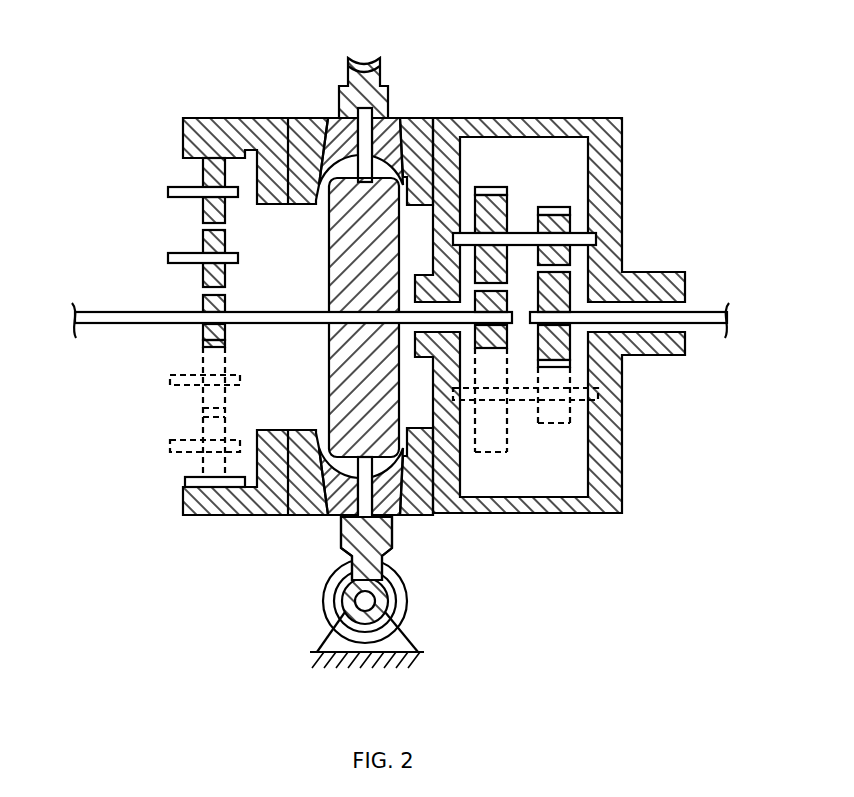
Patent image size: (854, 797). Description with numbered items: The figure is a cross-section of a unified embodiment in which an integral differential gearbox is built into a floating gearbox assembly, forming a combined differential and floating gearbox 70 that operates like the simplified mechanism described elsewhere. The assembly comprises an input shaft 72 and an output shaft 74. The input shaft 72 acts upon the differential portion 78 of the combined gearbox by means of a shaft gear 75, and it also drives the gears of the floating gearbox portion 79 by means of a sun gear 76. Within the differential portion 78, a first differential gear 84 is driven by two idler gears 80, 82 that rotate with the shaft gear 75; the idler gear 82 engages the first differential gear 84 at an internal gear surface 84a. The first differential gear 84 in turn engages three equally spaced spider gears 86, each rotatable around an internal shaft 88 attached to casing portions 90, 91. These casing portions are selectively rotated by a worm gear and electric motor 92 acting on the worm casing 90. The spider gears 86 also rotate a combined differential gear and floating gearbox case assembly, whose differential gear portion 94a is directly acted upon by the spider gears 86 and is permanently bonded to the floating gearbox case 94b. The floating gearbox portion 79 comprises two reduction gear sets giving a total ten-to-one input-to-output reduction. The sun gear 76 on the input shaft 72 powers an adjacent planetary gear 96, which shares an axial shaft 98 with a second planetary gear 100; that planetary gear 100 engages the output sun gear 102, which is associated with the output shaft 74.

The combined differential and floating gearbox 70 is at (452, 78).
The input shaft 72 is at (118, 312).
The output shaft 74 is at (698, 312).
The shaft gear 75 is at (228, 306).
The sun gear 76 is at (508, 332).
The differential portion 78 is at (310, 110).
The floating gearbox portion 79 is at (603, 115).
The idler gear 80 is at (204, 241).
The idler gear 82 is at (204, 206).
The first differential gear 84 is at (297, 518).
The internal gear surface 84a is at (188, 477).
The spider gear 86 is at (390, 519).
The internal shaft 88 is at (362, 524).
The worm casing 90 is at (342, 551).
The casing portion 91 is at (350, 388).
The worm gear and electric motor 92 is at (395, 583).
The differential gear portion 94a is at (420, 118).
The floating gearbox case 94b is at (536, 120).
The planetary gear 96 is at (487, 188).
The axial shaft 98 is at (578, 232).
The planetary gear 100 is at (541, 185).
The output sun gear 102 is at (572, 283).